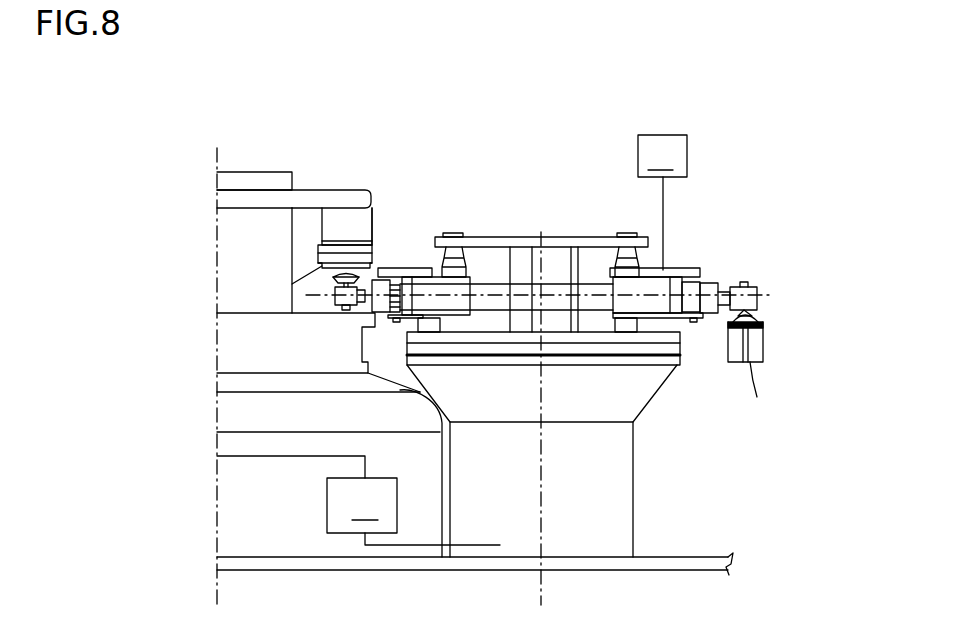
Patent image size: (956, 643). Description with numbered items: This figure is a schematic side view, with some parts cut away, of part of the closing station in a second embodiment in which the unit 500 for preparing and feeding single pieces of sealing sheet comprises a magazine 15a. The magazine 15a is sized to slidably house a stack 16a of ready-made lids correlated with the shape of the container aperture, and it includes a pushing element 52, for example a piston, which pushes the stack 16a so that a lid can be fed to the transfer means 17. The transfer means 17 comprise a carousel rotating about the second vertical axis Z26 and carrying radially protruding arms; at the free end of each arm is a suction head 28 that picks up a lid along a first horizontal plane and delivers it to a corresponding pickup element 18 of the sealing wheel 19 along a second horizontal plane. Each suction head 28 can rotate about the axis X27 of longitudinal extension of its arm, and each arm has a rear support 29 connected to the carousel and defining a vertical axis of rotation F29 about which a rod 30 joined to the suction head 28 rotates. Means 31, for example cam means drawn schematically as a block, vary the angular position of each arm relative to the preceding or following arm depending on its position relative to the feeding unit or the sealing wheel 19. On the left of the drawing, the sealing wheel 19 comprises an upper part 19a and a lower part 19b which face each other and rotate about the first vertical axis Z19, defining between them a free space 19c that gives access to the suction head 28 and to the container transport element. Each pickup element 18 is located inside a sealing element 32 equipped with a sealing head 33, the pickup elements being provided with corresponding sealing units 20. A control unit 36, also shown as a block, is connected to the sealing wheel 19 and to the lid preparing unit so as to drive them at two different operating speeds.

The transfer means 17 is at (580, 521).
The pickup element 18 is at (384, 230).
The sealing wheel 19 is at (283, 272).
The upper part 19a is at (230, 198).
The lower part 19b is at (233, 416).
The free space 19c is at (300, 230).
The sealing unit 20 is at (322, 272).
The suction head 28 is at (765, 316).
The rear support 29 is at (487, 237).
The rod 30 is at (706, 272).
The means for varying the angular position 31 is at (662, 202).
The sealing element 32 is at (352, 243).
The sealing head 33 is at (320, 206).
The control unit 36 is at (413, 511).
The pushing element 52 is at (759, 393).
The unit for preparing and feeding single pieces of sealing sheet 500 is at (780, 314).
The magazine 15a is at (763, 343).
The stack of lids 16a is at (763, 327).
The vertical axis of rotation F29 is at (452, 231).
The axis of longitudinal extension of the arm X27 is at (413, 260).
The first vertical axis Z19 is at (217, 149).
The second vertical axis Z26 is at (557, 236).